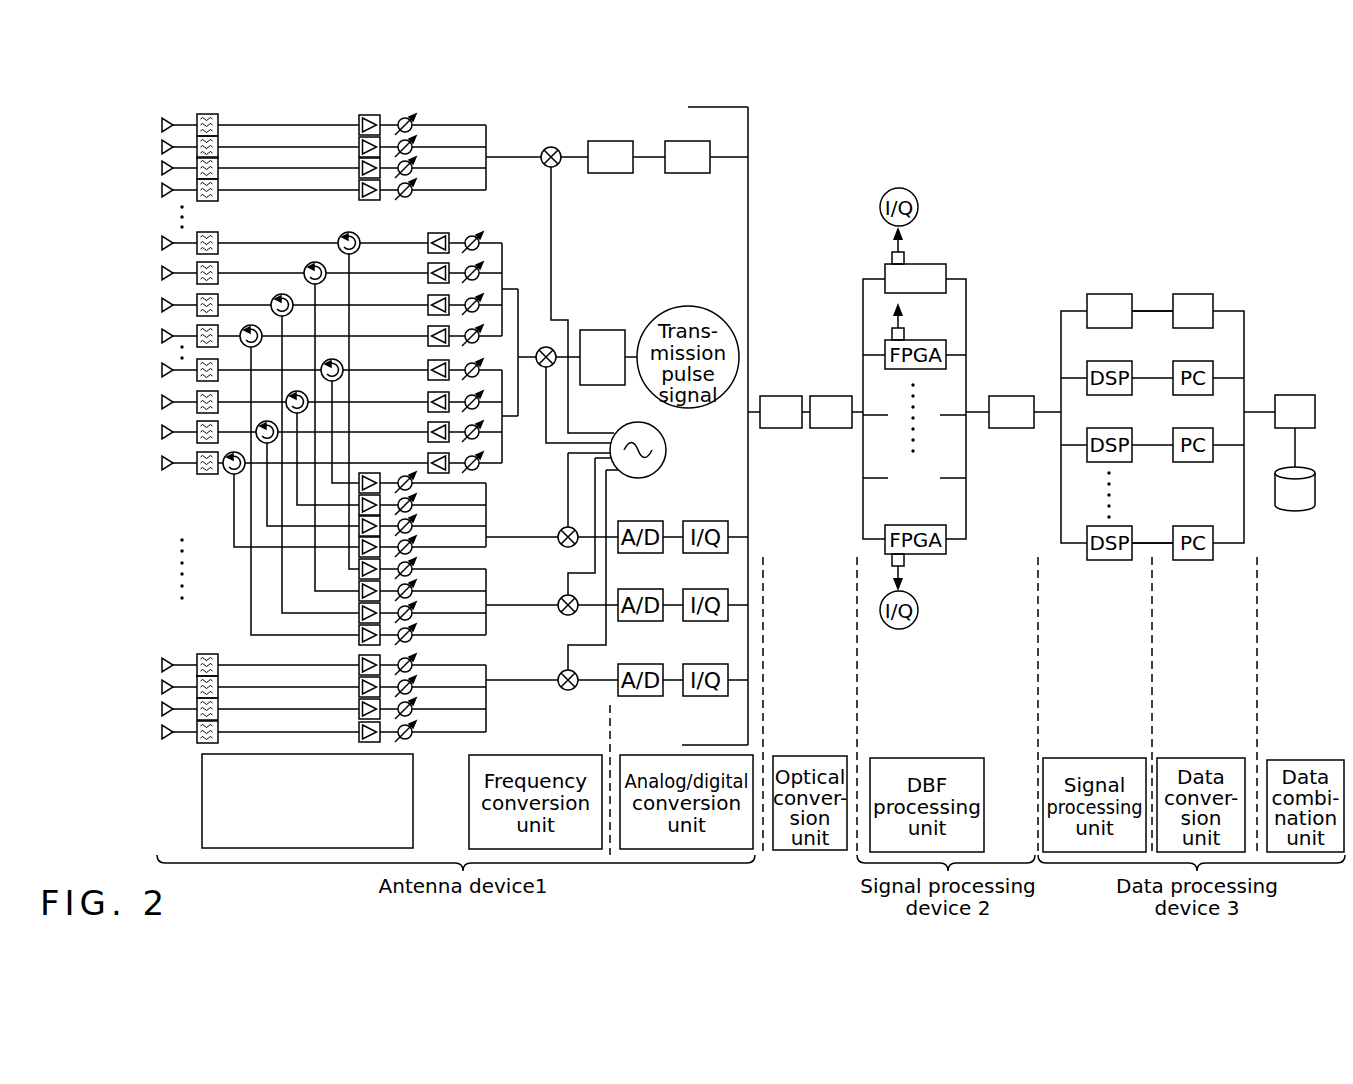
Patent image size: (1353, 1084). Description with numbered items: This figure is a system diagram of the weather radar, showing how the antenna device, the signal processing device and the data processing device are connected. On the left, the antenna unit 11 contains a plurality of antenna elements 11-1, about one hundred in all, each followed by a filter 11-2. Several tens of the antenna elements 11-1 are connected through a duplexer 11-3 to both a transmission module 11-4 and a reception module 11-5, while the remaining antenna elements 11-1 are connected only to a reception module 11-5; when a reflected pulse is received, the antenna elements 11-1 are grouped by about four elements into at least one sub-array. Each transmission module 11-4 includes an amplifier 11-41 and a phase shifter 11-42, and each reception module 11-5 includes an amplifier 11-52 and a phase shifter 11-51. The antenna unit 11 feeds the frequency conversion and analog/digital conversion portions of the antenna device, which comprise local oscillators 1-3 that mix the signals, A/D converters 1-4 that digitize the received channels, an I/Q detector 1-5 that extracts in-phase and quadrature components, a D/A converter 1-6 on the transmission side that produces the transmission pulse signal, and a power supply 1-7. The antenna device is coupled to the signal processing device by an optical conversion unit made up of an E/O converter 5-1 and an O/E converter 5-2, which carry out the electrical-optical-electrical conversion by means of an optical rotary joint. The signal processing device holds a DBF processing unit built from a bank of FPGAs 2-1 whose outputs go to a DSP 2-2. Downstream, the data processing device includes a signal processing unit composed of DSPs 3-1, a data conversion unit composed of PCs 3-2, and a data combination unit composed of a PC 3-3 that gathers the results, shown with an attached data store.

The antenna unit 11 is at (202, 793).
The antenna element 11-1 is at (163, 121).
The filter 11-2 is at (222, 103).
The duplexer 11-3 is at (340, 236).
The transmission module 11-4 is at (459, 223).
The amplifier 11-41 is at (427, 236).
The phase shifter 11-42 is at (506, 237).
The reception module 11-5 is at (419, 96).
The phase shifter 11-51 is at (378, 106).
The amplifier 11-52 is at (419, 118).
The local oscillator 1-3 is at (551, 147).
The A/D converter 1-4 is at (604, 141).
The I/Q detector 1-5 is at (678, 141).
The D/A converter 1-6 is at (598, 330).
The power supply 1-7 is at (666, 450).
The E/O converter 5-1 is at (776, 396).
The O/E converter 5-2 is at (825, 396).
The FPGA 2-1 is at (932, 264).
The DSP 2-2 is at (1011, 396).
The DSP 3-1 is at (1107, 294).
The PC 3-2 is at (1188, 294).
The PC 3-3 is at (1292, 395).